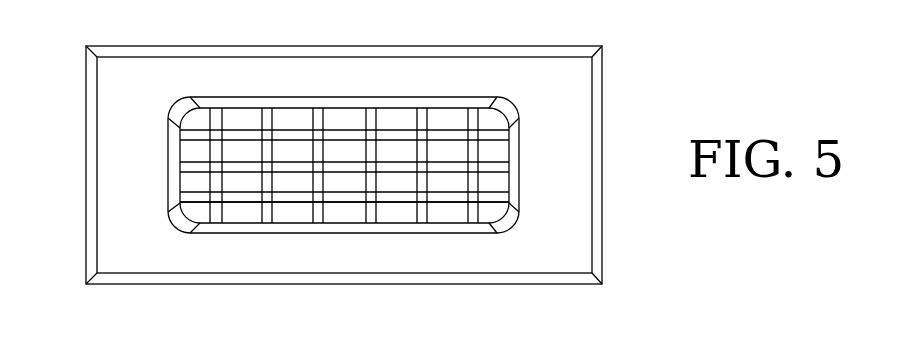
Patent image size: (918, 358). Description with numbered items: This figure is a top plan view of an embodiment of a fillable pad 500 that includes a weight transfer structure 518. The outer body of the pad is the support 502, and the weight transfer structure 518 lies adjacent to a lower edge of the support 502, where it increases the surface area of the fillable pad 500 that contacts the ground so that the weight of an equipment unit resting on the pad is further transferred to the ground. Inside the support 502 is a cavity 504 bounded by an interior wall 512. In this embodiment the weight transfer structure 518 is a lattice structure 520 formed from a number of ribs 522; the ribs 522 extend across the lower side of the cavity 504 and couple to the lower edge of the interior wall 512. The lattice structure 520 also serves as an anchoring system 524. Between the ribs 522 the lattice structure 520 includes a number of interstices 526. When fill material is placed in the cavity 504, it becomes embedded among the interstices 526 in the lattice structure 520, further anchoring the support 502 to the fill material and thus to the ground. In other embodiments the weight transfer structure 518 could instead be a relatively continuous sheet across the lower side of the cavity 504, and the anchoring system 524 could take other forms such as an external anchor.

The fillable pad 500 is at (614, 58).
The support 502 is at (90, 263).
The cavity 504 is at (493, 178).
The interior wall 512 is at (513, 140).
The weight transfer structure 518 is at (279, 207).
The lattice structure 520 is at (269, 210).
The anchoring system 524 is at (344, 221).
The ribs 522 is at (472, 205).
The interstices 526 is at (352, 207).